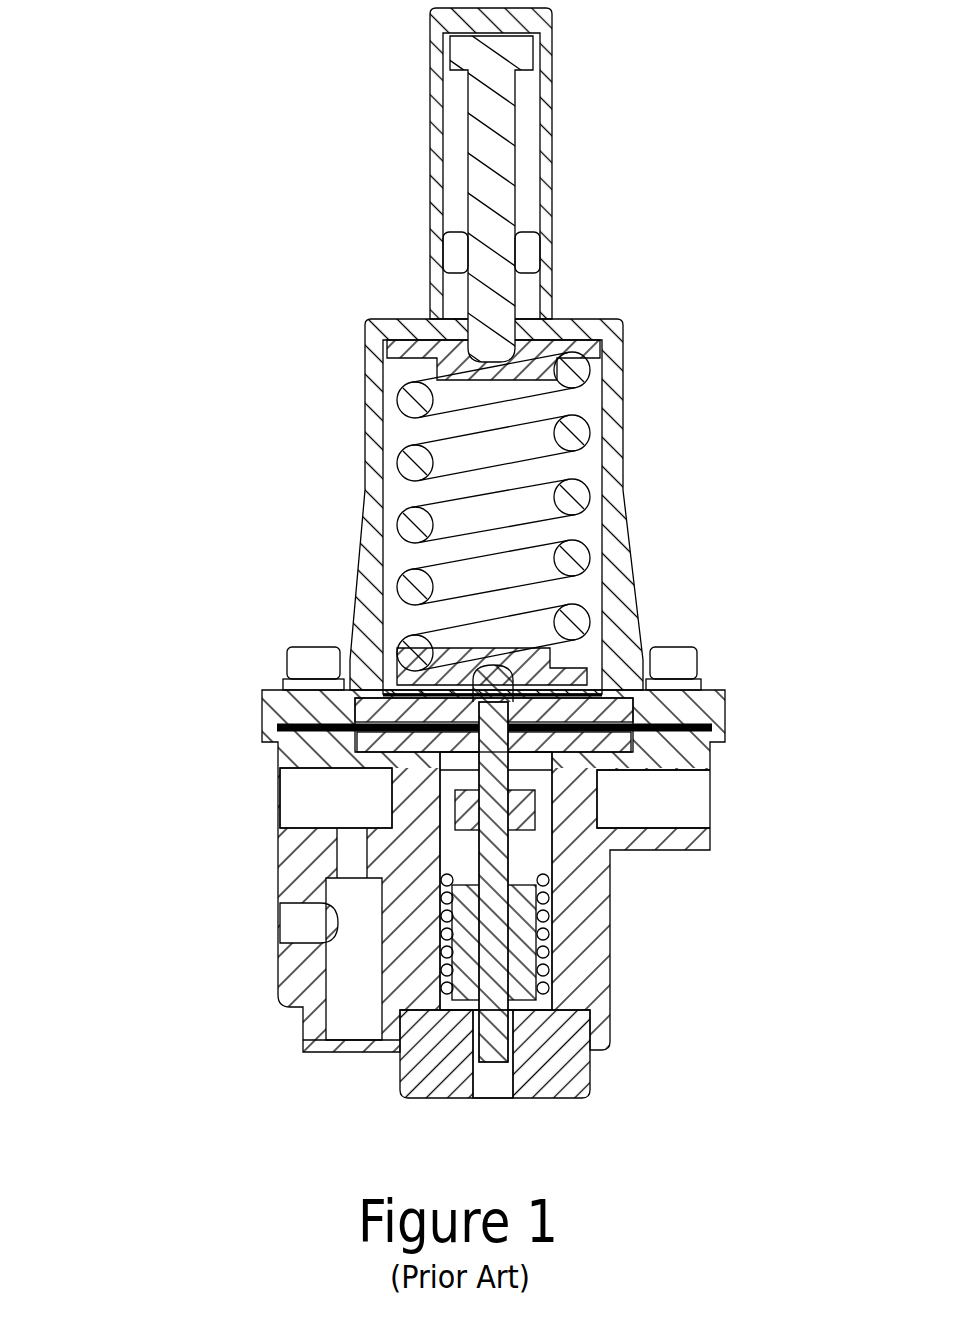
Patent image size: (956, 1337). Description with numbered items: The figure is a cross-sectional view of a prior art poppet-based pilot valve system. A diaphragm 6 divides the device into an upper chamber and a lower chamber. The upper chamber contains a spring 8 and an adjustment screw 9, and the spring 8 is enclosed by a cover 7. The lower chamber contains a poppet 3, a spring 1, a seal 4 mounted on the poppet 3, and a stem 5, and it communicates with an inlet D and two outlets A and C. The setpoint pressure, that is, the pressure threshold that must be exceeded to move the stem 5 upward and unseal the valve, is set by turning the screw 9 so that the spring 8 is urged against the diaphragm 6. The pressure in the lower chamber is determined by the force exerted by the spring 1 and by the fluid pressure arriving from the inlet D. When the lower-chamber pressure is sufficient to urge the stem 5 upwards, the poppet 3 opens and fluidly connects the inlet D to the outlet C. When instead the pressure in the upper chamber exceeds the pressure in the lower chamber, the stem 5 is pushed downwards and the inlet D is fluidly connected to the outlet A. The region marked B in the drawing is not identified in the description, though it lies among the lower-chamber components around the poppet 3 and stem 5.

The spring 1 is at (307, 1043).
The poppet 3 is at (478, 925).
The seal 4 is at (468, 874).
The stem 5 is at (500, 857).
The diaphragm 6 is at (484, 842).
The cover 7 is at (372, 476).
The spring 8 is at (412, 410).
The adjustment screw 9 is at (480, 138).
The outlet A is at (290, 934).
The valve chamber B is at (611, 881).
The outlet C is at (675, 803).
The inlet D is at (495, 1078).